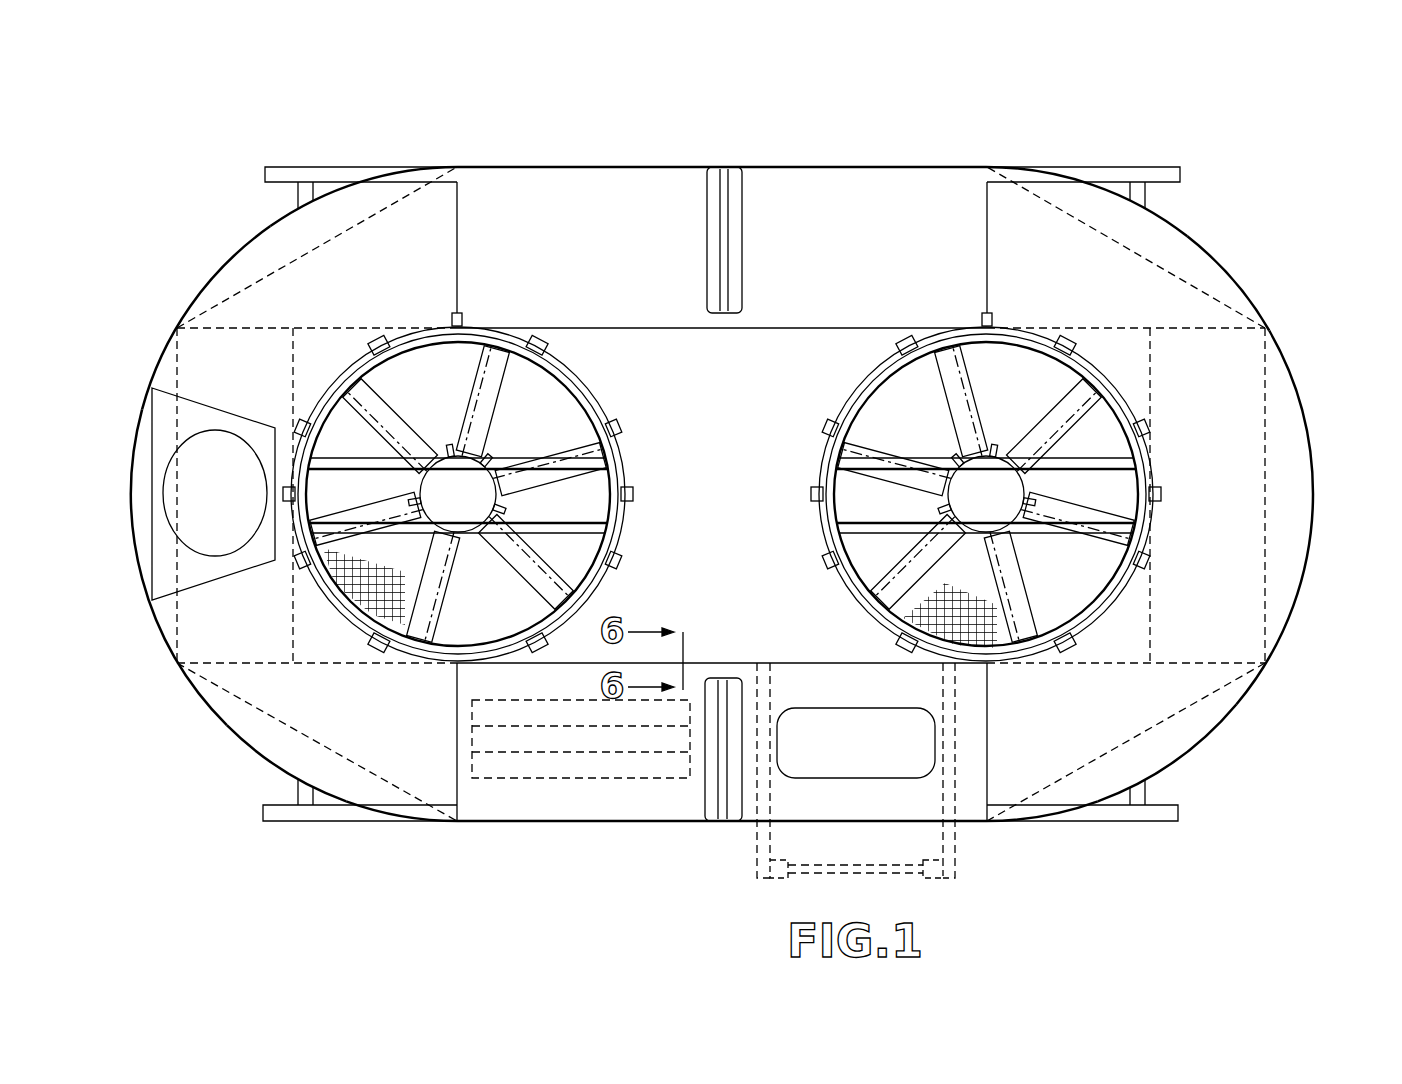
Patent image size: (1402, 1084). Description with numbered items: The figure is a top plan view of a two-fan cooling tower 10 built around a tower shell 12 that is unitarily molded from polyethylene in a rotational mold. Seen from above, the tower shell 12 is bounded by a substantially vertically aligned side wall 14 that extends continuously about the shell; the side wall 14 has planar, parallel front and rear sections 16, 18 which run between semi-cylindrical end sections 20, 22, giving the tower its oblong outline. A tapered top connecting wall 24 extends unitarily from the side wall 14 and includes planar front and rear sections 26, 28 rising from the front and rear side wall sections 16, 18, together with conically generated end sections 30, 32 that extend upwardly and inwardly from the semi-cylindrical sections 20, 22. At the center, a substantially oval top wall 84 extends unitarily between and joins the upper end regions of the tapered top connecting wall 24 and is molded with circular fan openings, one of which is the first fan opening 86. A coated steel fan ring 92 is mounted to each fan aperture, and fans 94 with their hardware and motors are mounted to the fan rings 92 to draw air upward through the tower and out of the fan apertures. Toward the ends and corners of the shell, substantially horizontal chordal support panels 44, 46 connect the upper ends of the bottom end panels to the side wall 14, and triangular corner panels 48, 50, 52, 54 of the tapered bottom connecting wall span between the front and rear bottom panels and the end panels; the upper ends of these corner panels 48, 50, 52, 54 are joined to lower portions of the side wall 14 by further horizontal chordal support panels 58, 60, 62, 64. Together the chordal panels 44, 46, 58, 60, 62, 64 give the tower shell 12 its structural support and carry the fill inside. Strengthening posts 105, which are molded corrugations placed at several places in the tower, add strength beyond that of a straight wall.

The two-fan cooling tower 10 is at (731, 491).
The tower shell 12 is at (938, 143).
The side wall 14 is at (575, 162).
The front section of side wall 16 is at (568, 823).
The rear section of side wall 18 is at (795, 168).
The semi-cylindrical end section 20 is at (147, 408).
The semi-cylindrical end section 22 is at (1303, 420).
The tapered top connecting wall 24 is at (520, 793).
The front section of top connecting wall 26 is at (829, 698).
The rear section of top connecting wall 28 is at (584, 247).
The conically generated end section 30 is at (190, 366).
The conically generated end section 32 is at (1020, 212).
The chordal support panel 44 is at (140, 548).
The chordal support panel 46 is at (1312, 512).
The triangular corner panel 48 is at (281, 723).
The triangular corner panel 50 is at (220, 298).
The triangular corner panel 52 is at (1025, 803).
The triangular corner panel 54 is at (1228, 302).
The horizontal chordal support panel 58 is at (215, 697).
The horizontal chordal support panel 60 is at (272, 243).
The horizontal chordal support panel 62 is at (1218, 712).
The horizontal chordal support panel 64 is at (1165, 232).
The top wall 84 is at (712, 505).
The first circular fan opening 86 is at (556, 363).
The fan ring 92 is at (425, 340).
The fan 94 is at (470, 468).
The strengthening post 105 is at (746, 182).